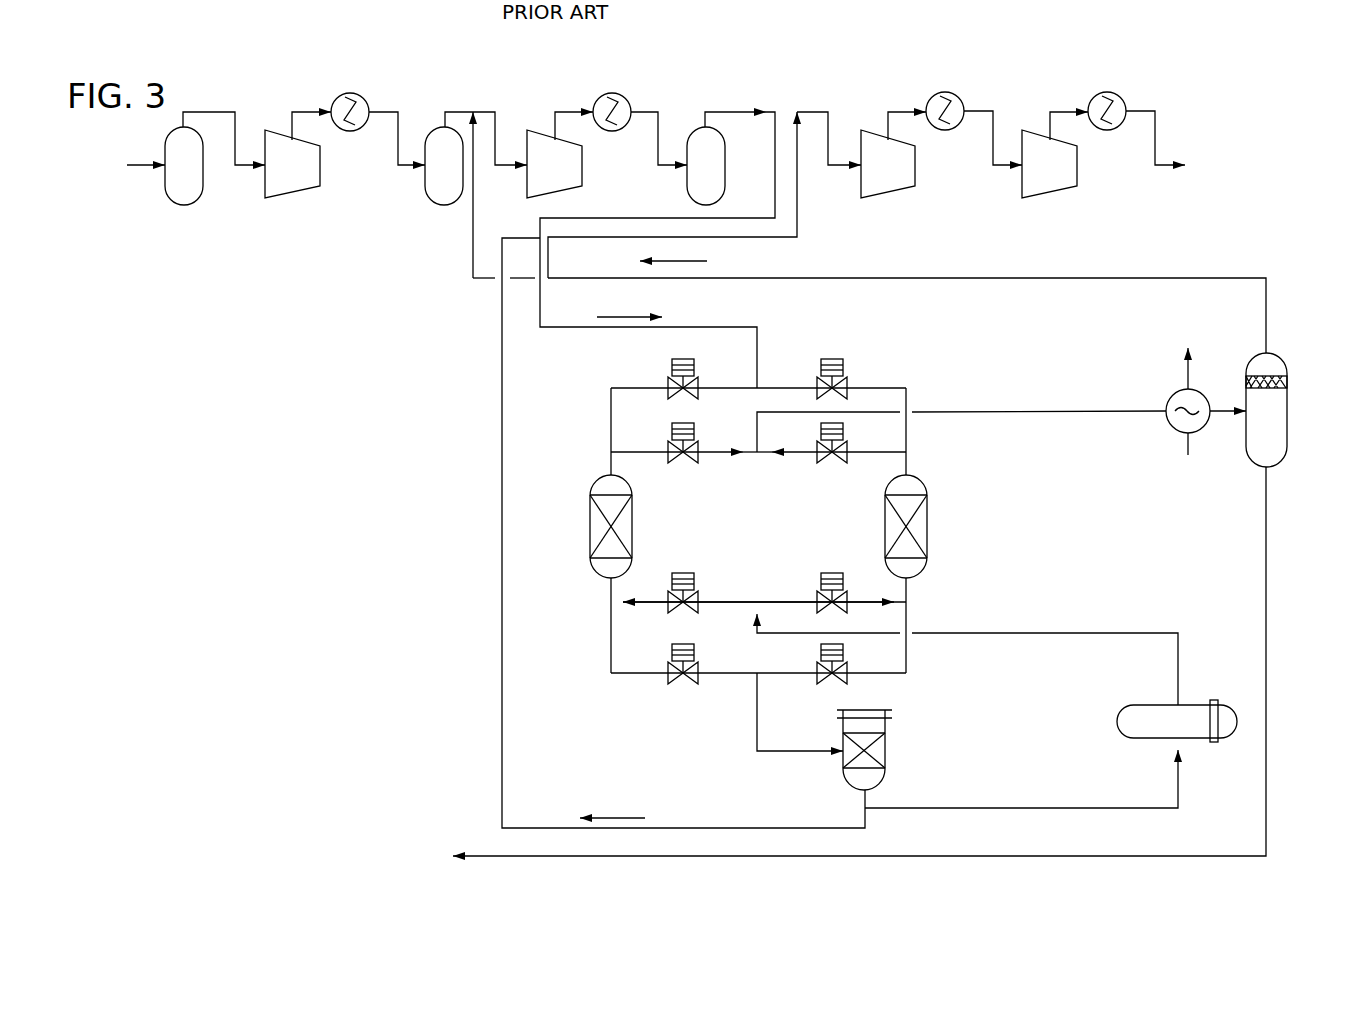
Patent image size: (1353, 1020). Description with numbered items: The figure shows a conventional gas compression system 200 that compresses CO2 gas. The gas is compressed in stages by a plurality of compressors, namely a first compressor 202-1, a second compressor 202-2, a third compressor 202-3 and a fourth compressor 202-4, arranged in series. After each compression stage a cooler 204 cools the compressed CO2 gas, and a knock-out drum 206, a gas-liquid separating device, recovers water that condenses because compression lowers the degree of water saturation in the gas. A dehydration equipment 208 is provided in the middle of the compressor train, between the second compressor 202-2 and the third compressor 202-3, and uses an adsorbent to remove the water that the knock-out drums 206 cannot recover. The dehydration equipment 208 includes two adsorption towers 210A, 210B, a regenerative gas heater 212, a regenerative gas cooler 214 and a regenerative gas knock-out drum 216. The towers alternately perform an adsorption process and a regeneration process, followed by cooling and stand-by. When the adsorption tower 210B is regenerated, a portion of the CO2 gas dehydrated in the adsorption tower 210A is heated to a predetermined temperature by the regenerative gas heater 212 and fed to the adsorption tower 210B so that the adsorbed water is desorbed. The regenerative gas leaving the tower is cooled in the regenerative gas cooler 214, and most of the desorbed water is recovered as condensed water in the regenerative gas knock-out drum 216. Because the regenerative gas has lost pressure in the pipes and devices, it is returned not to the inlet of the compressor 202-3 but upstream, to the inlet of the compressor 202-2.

The gas compression system 200 is at (320, 380).
The compressor 202-1 is at (295, 198).
The compressor 202-2 is at (560, 190).
The compressor 202-3 is at (907, 190).
The compressor 202-4 is at (1052, 193).
The cooler 204 is at (363, 94).
The knock-out drum 206 is at (183, 205).
The dehydration equipment 208 is at (472, 482).
The adsorption tower 210A is at (632, 525).
The adsorption tower 210B is at (927, 525).
The regenerative gas heater 212 is at (1197, 702).
The regenerative gas cooler 214 is at (1172, 392).
The regenerative gas knock-out drum 216 is at (1278, 355).